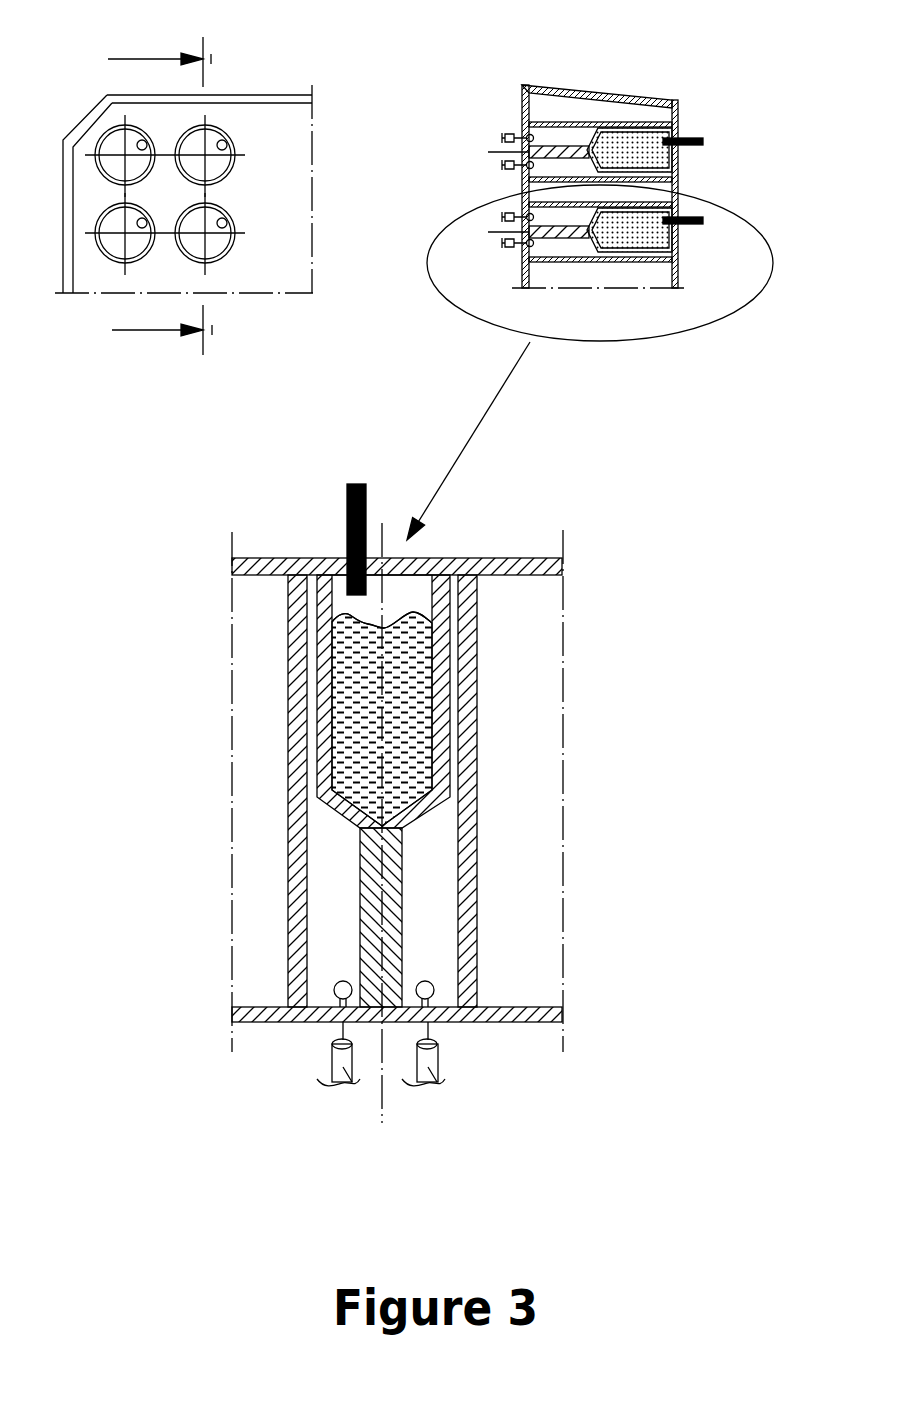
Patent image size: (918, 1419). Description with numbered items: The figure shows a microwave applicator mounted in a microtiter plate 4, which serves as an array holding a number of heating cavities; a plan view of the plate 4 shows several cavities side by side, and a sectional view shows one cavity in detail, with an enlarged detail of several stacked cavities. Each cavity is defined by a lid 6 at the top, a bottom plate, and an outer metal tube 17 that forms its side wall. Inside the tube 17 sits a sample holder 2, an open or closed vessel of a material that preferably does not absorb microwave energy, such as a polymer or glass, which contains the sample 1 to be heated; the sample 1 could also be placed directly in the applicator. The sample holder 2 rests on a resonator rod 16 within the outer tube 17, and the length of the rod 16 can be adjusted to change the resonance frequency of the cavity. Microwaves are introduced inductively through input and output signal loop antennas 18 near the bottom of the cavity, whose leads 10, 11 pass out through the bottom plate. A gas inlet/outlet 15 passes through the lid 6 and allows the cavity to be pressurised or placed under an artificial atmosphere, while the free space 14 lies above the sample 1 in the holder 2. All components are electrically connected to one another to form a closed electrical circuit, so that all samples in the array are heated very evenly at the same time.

The sample 1 is at (402, 700).
The sample holder 2 is at (438, 778).
The microtiter plate 4 is at (258, 120).
The lid 6 is at (673, 110).
The lead 10 is at (358, 1082).
The lead 11 is at (443, 1082).
The free space 14 is at (407, 588).
The gas inlet/outlet 15 is at (702, 137).
The resonator rod 16 is at (397, 912).
The outer metal tube 17 is at (297, 868).
The input and output signal loop antennas 18 is at (350, 982).